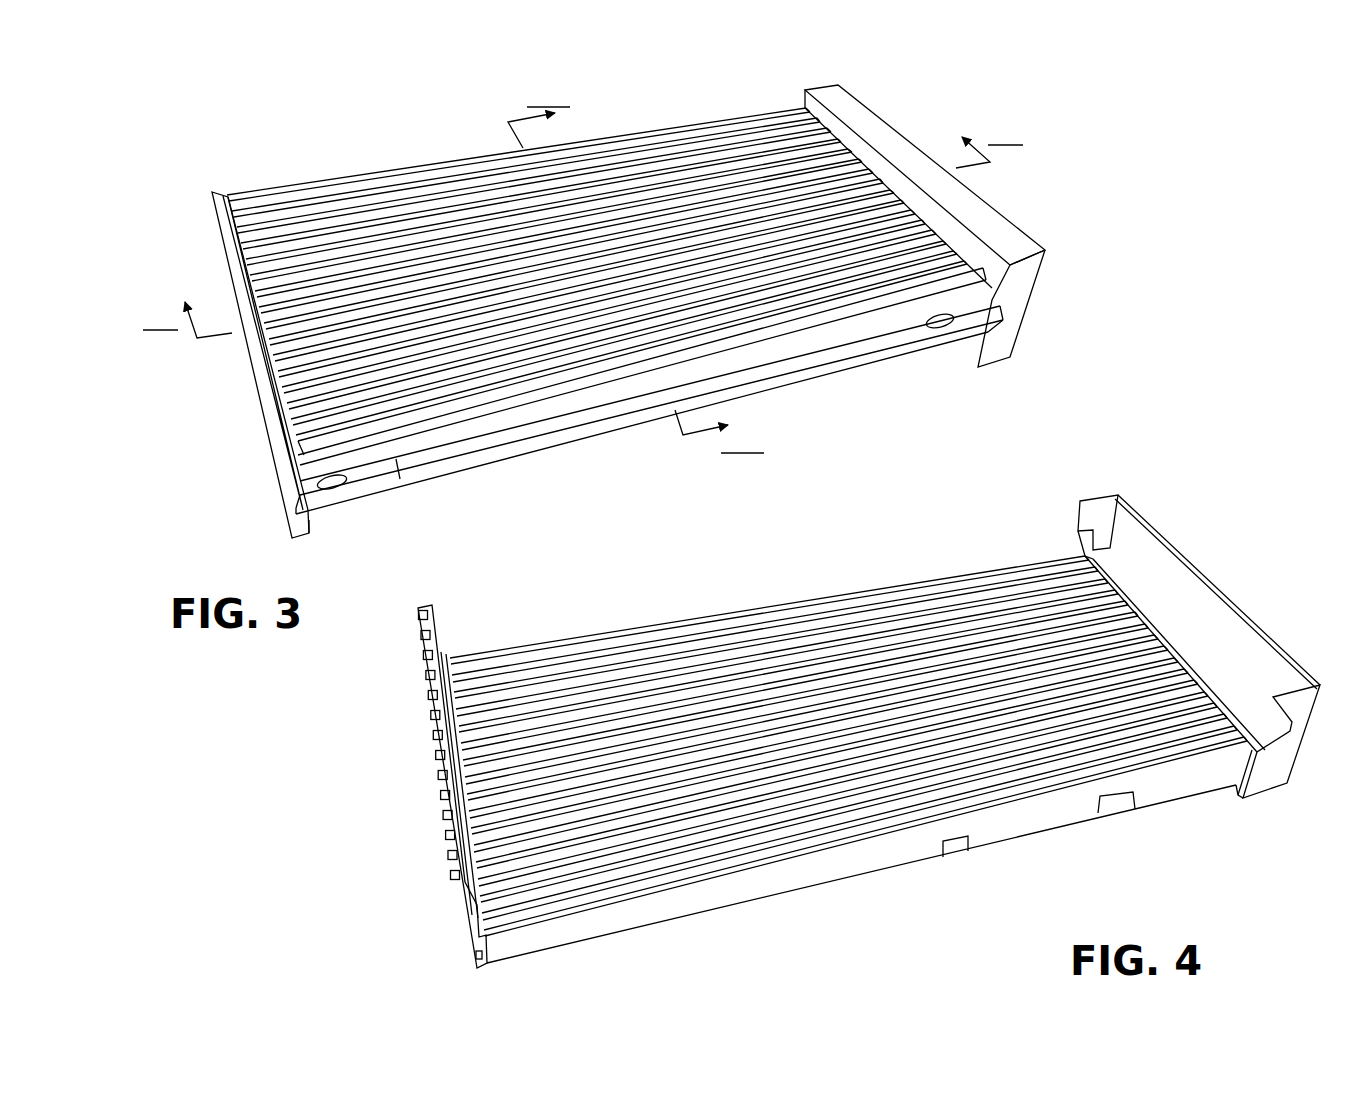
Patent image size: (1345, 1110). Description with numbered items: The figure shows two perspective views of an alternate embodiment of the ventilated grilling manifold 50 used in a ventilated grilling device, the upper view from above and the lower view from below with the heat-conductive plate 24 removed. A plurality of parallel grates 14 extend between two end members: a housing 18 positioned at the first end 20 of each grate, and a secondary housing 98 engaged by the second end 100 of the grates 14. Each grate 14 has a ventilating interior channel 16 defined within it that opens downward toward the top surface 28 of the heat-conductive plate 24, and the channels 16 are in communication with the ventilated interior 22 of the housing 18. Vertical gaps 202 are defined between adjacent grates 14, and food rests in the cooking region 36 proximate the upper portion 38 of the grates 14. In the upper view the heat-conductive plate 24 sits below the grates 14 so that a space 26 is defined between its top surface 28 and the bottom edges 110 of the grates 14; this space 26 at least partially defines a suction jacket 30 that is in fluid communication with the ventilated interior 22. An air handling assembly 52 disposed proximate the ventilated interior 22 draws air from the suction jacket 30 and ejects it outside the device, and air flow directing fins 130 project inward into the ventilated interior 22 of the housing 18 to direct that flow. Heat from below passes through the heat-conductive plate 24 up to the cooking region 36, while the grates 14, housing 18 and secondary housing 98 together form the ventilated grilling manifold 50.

In FIG. 3, the grates 14 is at (449, 420).
In FIG. 4, the grates 14 is at (770, 880).
In FIG. 4, the interior channels 16 is at (613, 635).
In FIG. 3, the housing 18 is at (897, 124).
In FIG. 4, the housing 18 is at (1228, 588).
In FIG. 3, the first end 20 is at (805, 110).
In FIG. 4, the first end 20 is at (1228, 775).
In FIG. 3, the ventilated interior 22 is at (1003, 242).
In FIG. 4, the ventilated interior 22 is at (1133, 542).
In FIG. 3, the heat-conductive plate 24 is at (750, 372).
In FIG. 3, the space 26 is at (866, 343).
In FIG. 3, the top surface 28 is at (658, 493).
In FIG. 3, the suction jacket 30 is at (563, 426).
In FIG. 3, the cooking region 36 is at (462, 158).
In FIG. 3, the upper portion 38 is at (985, 280).
In FIG. 3, the ventilated grilling manifold 50 is at (352, 148).
In FIG. 4, the ventilated grilling manifold 50 is at (398, 793).
In FIG. 4, the air handling assembly 52 is at (1075, 547).
In FIG. 3, the secondary housing 98 is at (228, 291).
In FIG. 4, the secondary housing 98 is at (437, 712).
In FIG. 3, the second end 100 is at (213, 190).
In FIG. 4, the second end 100 is at (447, 655).
In FIG. 3, the bottom edge 110 is at (396, 462).
In FIG. 4, the air flow directing fins 130 is at (1237, 713).
In FIG. 3, the vertical gaps 202 is at (297, 397).